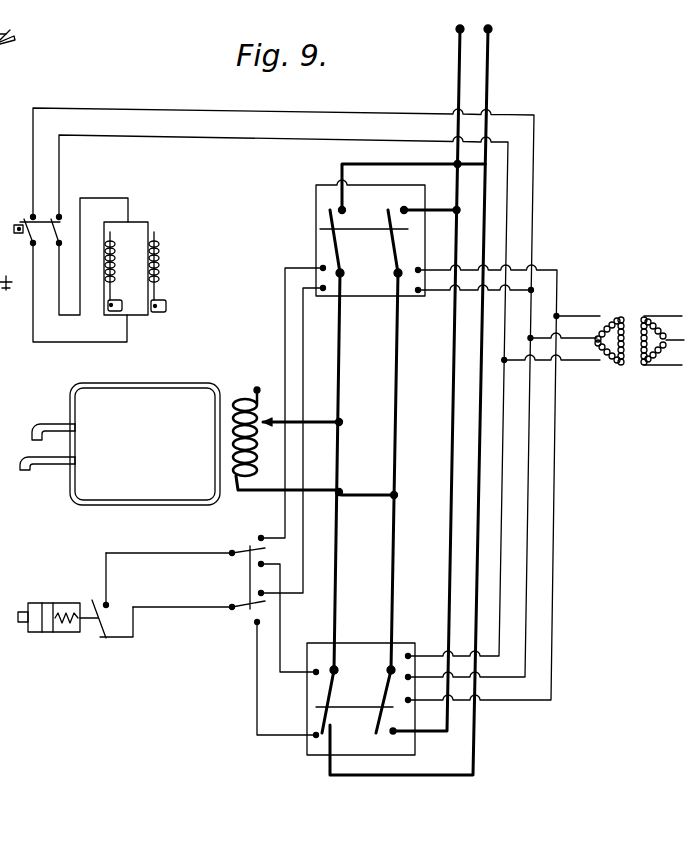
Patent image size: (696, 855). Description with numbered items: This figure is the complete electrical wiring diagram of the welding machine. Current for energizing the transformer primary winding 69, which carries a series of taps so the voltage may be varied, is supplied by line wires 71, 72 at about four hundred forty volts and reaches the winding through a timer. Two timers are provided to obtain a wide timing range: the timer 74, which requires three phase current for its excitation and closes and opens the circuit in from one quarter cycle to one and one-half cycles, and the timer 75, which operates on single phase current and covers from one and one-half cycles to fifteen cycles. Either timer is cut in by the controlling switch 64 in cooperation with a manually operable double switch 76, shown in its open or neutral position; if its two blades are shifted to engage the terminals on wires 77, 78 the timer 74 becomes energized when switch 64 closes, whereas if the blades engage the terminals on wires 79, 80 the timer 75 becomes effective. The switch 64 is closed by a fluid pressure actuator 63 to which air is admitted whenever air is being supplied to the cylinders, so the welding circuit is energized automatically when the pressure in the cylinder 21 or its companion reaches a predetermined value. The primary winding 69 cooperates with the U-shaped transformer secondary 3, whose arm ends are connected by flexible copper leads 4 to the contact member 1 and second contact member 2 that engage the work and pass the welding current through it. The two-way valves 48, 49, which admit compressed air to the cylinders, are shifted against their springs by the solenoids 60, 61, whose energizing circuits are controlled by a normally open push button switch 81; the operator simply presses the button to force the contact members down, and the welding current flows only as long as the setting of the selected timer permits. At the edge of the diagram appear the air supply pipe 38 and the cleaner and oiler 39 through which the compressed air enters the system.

The contact member 1 is at (49, 424).
The second contact member 2 is at (48, 464).
The transformer secondary 3 is at (162, 384).
The flexible copper leads 4 is at (76, 412).
The cylinder 21 is at (9, 547).
The pipe 38 is at (3, 28).
The cleaner and oiler 39 is at (11, 56).
The two-way valve 48 is at (122, 304).
The two-way valve 49 is at (167, 304).
The solenoid 60 is at (113, 257).
The solenoid 61 is at (160, 260).
The fluid pressure actuator 63 is at (68, 602).
The controlling switch 64 is at (101, 638).
The primary winding 69 is at (234, 405).
The line wire 71 is at (458, 75).
The line wire 72 is at (490, 78).
The timer 74 is at (352, 642).
The timer 75 is at (378, 284).
The double switch 76 is at (245, 576).
The wire 77 is at (256, 645).
The wire 78 is at (281, 636).
The wire 79 is at (289, 404).
The wire 80 is at (304, 540).
The push button switch 81 is at (27, 233).